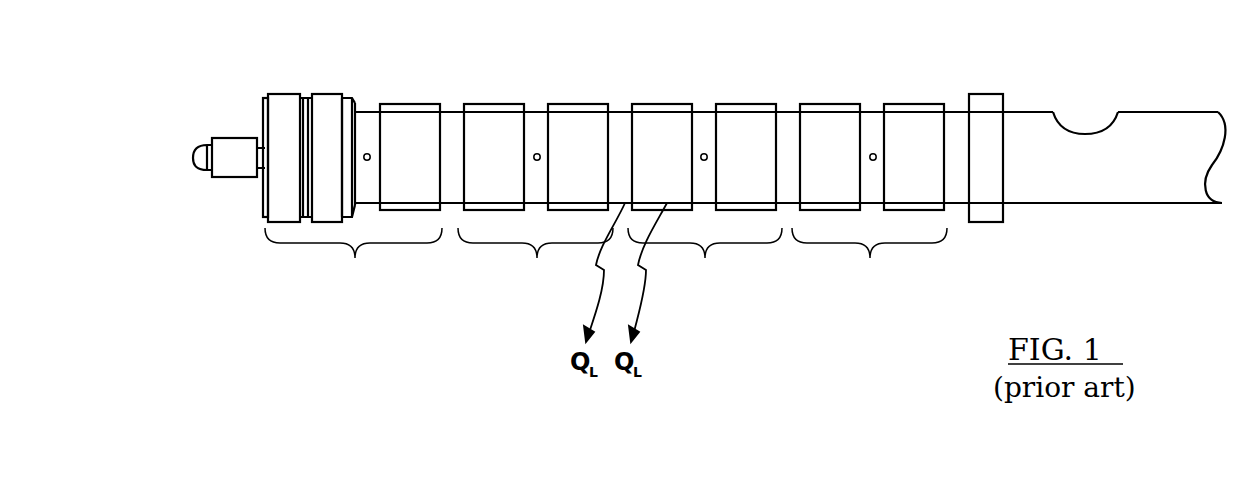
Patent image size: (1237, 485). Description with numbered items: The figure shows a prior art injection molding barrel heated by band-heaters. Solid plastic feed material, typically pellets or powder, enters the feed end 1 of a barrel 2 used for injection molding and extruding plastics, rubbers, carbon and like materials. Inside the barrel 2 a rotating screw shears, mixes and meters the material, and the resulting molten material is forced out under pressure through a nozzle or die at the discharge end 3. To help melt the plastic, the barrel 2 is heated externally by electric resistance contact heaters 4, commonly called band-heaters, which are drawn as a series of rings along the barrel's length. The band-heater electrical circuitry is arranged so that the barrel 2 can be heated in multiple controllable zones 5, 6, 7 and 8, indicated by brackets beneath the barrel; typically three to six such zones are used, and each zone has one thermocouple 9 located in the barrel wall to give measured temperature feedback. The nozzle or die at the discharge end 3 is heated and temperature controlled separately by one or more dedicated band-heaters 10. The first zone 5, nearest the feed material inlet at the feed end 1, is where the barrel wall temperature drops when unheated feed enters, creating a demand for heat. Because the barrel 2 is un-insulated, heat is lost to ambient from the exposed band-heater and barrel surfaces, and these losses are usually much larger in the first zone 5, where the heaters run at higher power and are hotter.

The feed end 1 is at (1087, 128).
The barrel 2 is at (1088, 203).
The discharge end 3 is at (197, 168).
The external electric resistance contact heaters 4 is at (330, 94).
The first zone 5 is at (869, 259).
The zone 6 is at (705, 259).
The zone 7 is at (535, 259).
The zone 8 is at (353, 259).
The thermocouple 9 is at (368, 154).
The dedicated band-heaters 10 is at (235, 136).